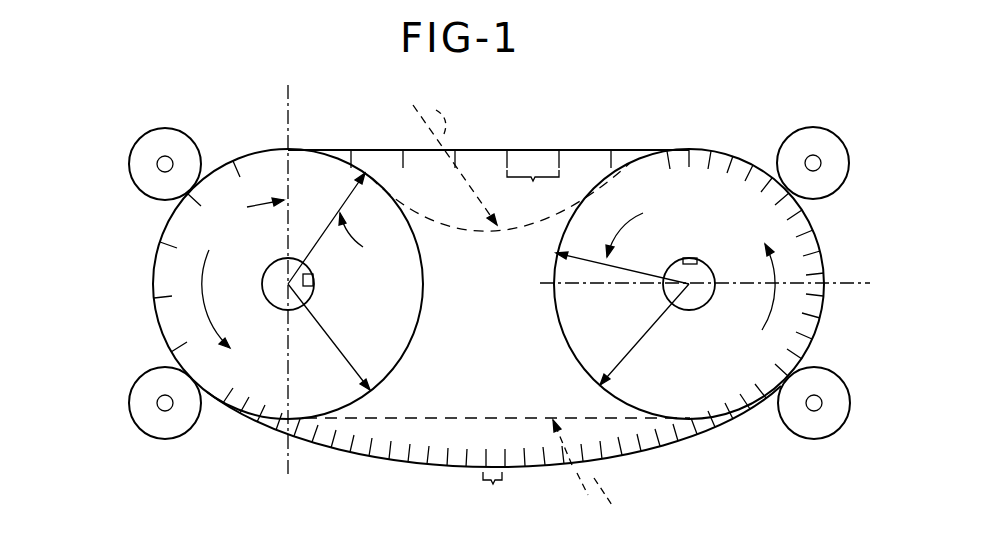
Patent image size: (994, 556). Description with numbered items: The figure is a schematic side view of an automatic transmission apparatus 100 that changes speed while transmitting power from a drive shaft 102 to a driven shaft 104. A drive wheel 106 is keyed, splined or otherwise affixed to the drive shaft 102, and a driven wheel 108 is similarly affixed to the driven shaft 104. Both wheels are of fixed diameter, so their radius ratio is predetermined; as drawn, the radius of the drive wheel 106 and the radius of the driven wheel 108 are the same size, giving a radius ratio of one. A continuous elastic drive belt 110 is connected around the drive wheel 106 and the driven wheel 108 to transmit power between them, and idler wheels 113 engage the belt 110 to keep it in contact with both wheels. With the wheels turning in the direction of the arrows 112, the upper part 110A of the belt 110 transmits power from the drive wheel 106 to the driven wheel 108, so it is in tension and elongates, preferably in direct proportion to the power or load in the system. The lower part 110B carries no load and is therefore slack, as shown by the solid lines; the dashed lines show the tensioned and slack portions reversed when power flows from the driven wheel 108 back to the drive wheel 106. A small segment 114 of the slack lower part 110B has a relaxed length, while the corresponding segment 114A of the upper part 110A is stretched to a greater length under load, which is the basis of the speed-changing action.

The automatic transmission apparatus 100 is at (672, 120).
The drive shaft 102 is at (265, 262).
The driven shaft 104 is at (703, 300).
The drive wheel 106 is at (243, 383).
The driven wheel 108 is at (825, 316).
The elastic drive belt 110 is at (417, 460).
The upper part of belt 110A is at (405, 146).
The lower part of belt 110B is at (622, 457).
The arrows 112 is at (165, 318).
The idler wheels 113 is at (140, 148).
The belt segment 114 is at (493, 453).
The belt segment of upper portion 114A is at (531, 150).